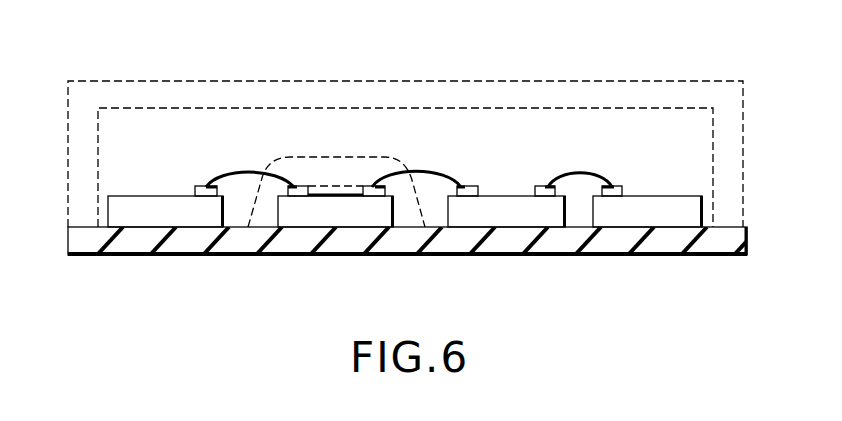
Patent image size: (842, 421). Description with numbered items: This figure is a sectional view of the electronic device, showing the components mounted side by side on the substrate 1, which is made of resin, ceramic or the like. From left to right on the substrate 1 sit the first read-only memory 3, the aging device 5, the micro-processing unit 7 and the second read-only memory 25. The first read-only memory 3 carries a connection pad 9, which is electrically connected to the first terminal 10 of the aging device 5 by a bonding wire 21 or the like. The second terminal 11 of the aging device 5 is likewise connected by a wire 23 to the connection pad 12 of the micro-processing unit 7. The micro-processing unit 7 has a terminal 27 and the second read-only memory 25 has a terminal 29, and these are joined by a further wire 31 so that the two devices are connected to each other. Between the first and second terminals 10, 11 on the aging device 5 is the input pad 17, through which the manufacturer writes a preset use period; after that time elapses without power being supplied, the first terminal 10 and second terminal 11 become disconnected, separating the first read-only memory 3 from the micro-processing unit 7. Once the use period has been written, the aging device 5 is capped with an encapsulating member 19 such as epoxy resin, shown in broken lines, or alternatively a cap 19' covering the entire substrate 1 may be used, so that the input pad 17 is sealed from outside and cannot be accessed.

The substrate 1 is at (720, 242).
The read-only memory (ROM) 3 is at (142, 217).
The aging device 5 is at (333, 214).
The micro-processing unit (MPU) 7 is at (520, 214).
The second read-only memory (ROM) 25 is at (647, 214).
The connection pad 9 is at (207, 193).
The first terminal 10 is at (292, 193).
The second terminal 11 is at (375, 193).
The connection pad 12 is at (468, 193).
The terminal 27 is at (537, 188).
The terminal 29 is at (623, 188).
The input pad 17 is at (320, 186).
The bonding wire 21 is at (233, 171).
The bonding wire 23 is at (427, 176).
The bonding wire 31 is at (580, 173).
The encapsulating member 19 is at (405, 135).
The cap 19' is at (405, 119).